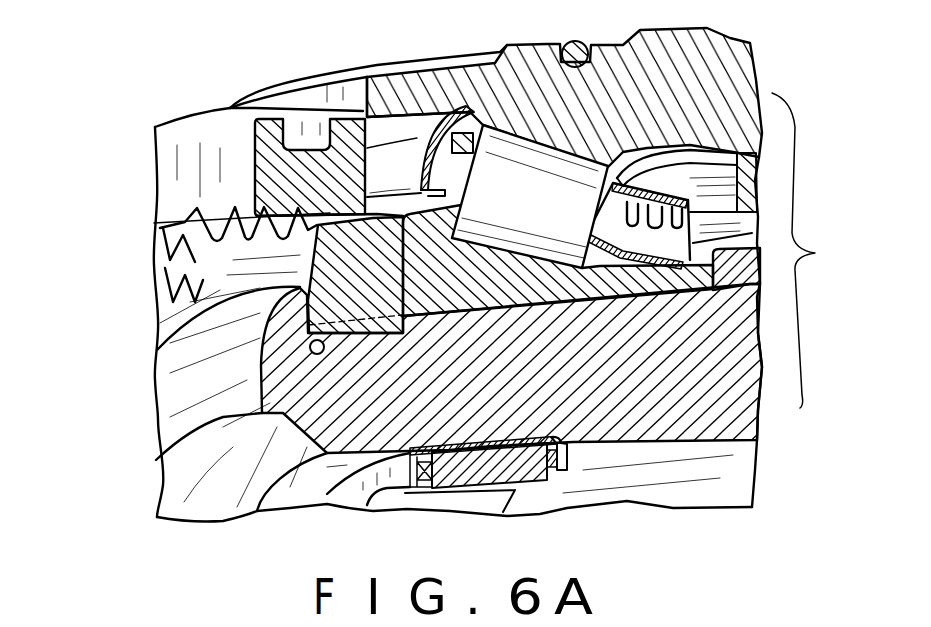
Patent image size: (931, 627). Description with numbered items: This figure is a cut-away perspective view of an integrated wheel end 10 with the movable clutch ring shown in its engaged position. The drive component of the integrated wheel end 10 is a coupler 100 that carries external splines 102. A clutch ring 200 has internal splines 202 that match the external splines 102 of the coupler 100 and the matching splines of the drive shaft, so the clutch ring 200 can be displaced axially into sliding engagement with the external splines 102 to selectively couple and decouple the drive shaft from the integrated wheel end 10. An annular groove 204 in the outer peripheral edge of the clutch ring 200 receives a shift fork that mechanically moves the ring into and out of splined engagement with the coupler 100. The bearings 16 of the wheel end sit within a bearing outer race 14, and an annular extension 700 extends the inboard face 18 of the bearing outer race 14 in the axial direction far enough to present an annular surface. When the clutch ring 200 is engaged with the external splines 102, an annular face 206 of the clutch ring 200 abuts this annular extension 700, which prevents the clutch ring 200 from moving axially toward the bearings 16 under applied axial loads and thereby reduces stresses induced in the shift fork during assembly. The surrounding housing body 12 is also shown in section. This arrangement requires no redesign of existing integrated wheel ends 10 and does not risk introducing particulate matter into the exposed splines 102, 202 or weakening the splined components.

The integrated wheel end 10 is at (811, 250).
The housing body 12 is at (470, 296).
The bearing outer race 14 is at (593, 110).
The bearings 16 is at (518, 226).
The inboard face 18 is at (323, 96).
The coupler 100 is at (305, 323).
The external splines 102 is at (310, 232).
The clutch ring 200 is at (306, 188).
The internal splines 202 is at (233, 222).
The annular groove 204 is at (328, 152).
The annular face 206 is at (410, 168).
The annular extension 700 is at (414, 95).